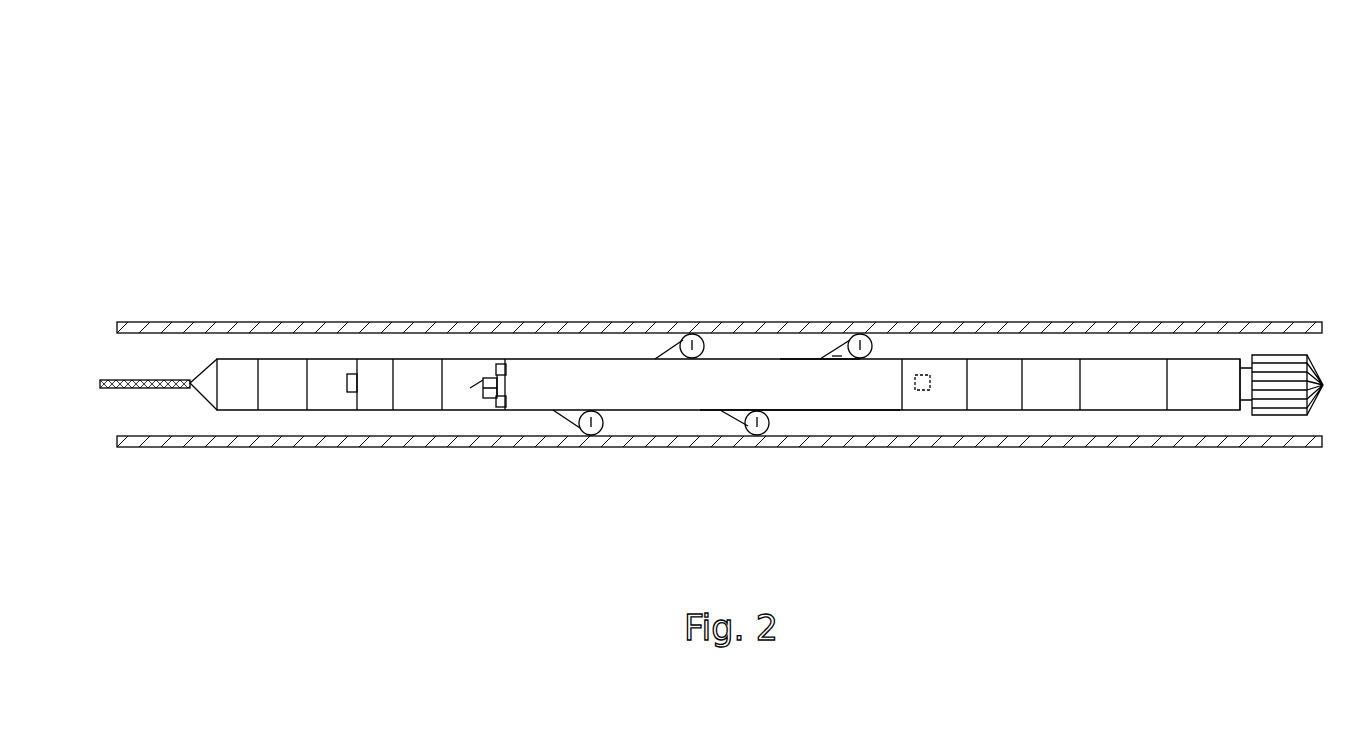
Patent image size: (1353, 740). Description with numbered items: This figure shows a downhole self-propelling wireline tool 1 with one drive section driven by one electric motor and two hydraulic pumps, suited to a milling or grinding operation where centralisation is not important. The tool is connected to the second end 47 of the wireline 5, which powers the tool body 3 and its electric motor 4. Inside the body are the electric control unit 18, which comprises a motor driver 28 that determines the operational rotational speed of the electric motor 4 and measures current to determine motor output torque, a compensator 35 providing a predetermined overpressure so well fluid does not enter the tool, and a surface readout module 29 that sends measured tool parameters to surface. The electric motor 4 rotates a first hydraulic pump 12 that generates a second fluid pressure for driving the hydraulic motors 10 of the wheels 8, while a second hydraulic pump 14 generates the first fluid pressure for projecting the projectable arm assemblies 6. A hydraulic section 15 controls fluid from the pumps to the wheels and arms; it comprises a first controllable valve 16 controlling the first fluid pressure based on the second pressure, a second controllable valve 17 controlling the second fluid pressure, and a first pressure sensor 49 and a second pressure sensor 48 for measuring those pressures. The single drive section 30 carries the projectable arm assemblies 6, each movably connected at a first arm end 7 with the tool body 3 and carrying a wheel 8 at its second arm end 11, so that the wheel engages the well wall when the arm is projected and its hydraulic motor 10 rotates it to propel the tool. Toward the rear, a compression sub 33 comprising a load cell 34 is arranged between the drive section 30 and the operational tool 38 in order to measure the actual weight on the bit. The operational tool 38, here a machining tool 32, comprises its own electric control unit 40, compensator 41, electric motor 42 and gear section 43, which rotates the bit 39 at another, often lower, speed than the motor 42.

The downhole self-propelling wireline tool 1 is at (1257, 117).
The tool body 3 is at (555, 362).
The electric motor 4 is at (322, 367).
The wireline 5 is at (137, 322).
The projectable arm assembly 6 is at (672, 350).
The first arm end 7 is at (818, 358).
The wheel 8 is at (690, 334).
The hydraulic motor 10 is at (700, 340).
The second arm end 11 is at (838, 350).
The first hydraulic pump 12 is at (373, 367).
The second hydraulic pump 14 is at (412, 367).
The hydraulic section 15 is at (476, 370).
The first controllable valve 16 is at (497, 372).
The second controllable valve 17 is at (490, 410).
The electric control unit 18 is at (237, 376).
The motor driver 28 is at (345, 394).
The surface readout module 29 is at (480, 396).
The drive section 30 is at (842, 402).
The machining tool 32 is at (1306, 415).
The compression sub 33 is at (940, 402).
The load cell 34 is at (924, 378).
The compensator 35 is at (286, 375).
The operational tool 38 is at (1268, 356).
The bit 39 is at (1268, 405).
The electric control unit 40 is at (1003, 402).
The compensator 41 is at (1036, 402).
The electric motor 42 is at (1128, 402).
The gear section 43 is at (1183, 402).
The second end of the wireline 47 is at (188, 386).
The second pressure sensor 48 is at (507, 364).
The first pressure sensor 49 is at (499, 410).